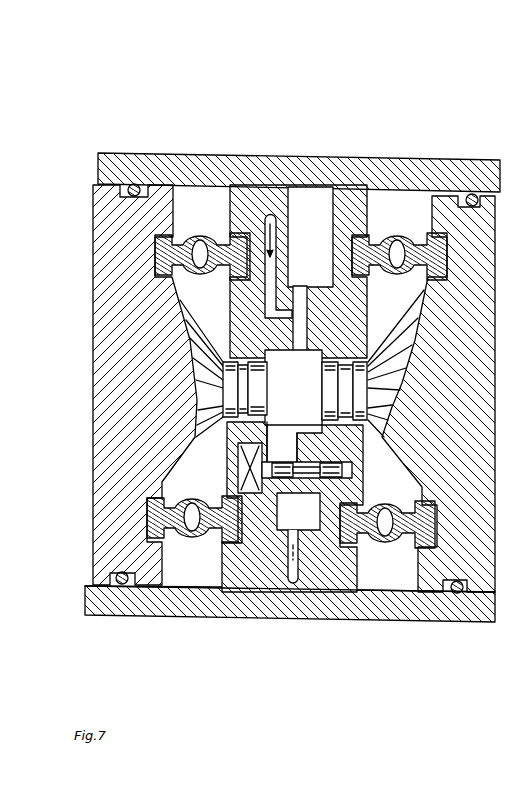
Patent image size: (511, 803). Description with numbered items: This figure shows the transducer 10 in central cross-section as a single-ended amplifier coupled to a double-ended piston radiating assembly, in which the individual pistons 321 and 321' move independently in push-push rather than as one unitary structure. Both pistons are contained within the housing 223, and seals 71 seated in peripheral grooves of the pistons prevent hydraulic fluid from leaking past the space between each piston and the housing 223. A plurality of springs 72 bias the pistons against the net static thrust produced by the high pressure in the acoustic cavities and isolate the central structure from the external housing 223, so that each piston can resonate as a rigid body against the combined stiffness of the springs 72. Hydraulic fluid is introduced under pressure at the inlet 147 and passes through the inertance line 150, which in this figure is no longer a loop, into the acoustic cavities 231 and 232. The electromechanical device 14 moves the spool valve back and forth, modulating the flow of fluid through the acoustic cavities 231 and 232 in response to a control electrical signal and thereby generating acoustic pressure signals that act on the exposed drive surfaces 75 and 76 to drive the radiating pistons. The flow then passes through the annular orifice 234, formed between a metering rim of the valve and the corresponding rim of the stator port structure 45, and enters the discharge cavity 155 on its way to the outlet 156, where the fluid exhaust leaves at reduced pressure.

The transducer 10 is at (269, 356).
The housing 223 is at (372, 163).
The piston 321' is at (117, 385).
The piston 321 is at (436, 394).
The seals 71 is at (134, 197).
The springs 72 is at (203, 236).
The acoustic cavity 232 is at (330, 234).
The inlet 147 is at (276, 270).
The inertance line 150 is at (300, 303).
The acoustic cavity 231 is at (314, 375).
The drive surface 76 is at (258, 404).
The drive surface 75 is at (322, 403).
The annular orifice 234 is at (290, 461).
The electromechanical device 14 is at (258, 477).
The stator port structure 45 is at (331, 484).
The discharge cavity 155 is at (314, 520).
The outlet 156 is at (288, 571).